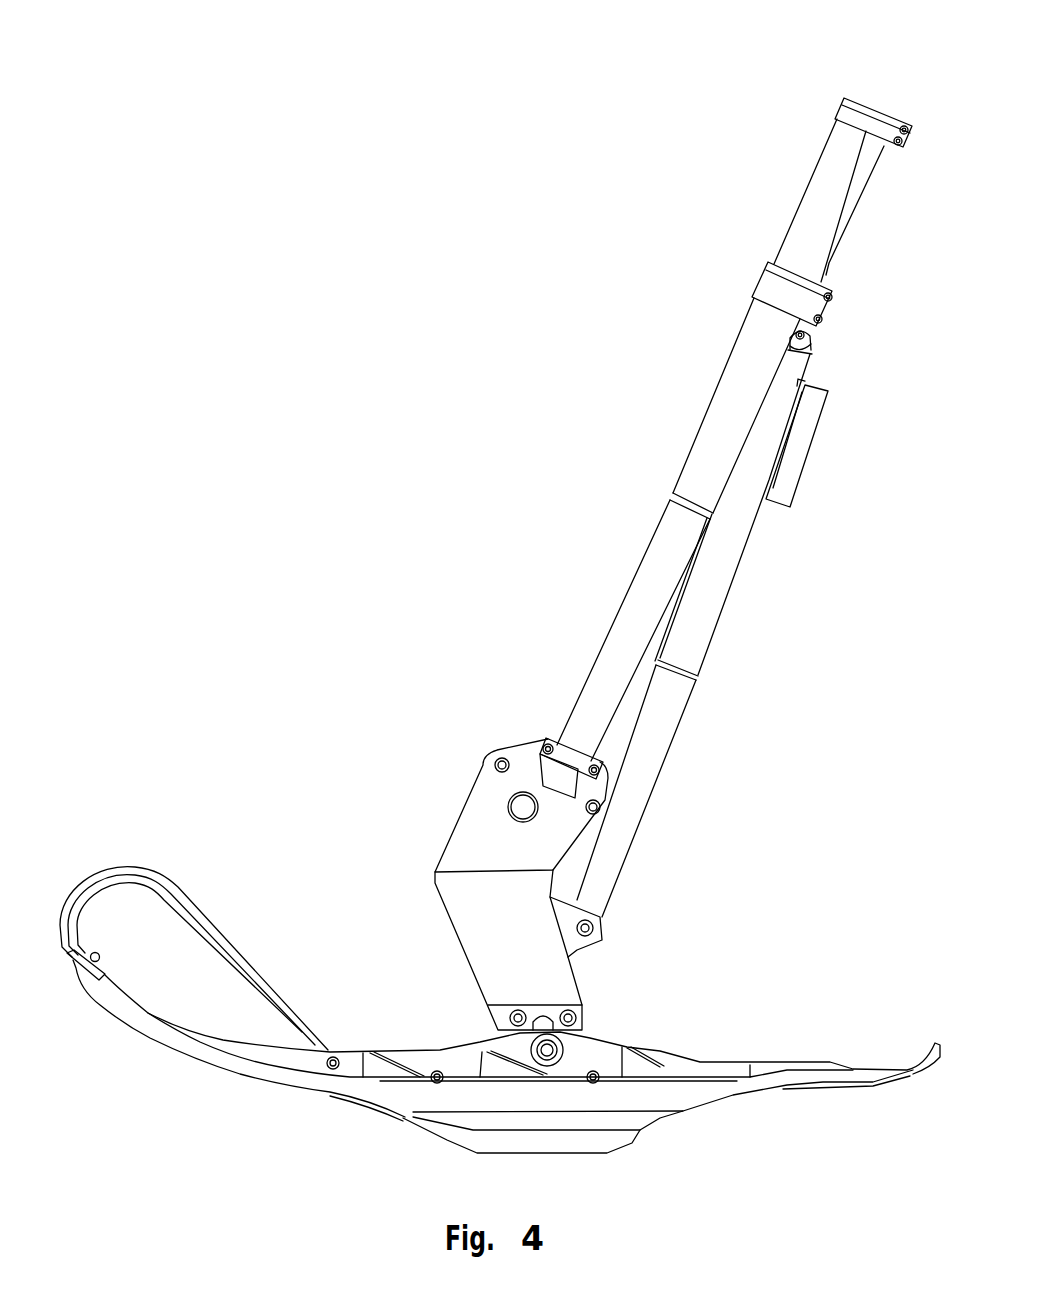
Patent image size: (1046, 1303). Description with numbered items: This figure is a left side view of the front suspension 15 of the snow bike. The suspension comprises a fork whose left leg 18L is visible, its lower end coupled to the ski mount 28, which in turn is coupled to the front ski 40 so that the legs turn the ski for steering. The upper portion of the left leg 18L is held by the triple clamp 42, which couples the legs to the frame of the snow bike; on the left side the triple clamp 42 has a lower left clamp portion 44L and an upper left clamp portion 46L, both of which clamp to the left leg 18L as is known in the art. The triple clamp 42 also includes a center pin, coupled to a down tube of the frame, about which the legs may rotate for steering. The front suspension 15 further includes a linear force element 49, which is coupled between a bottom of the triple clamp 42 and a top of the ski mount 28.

The front suspension 15 is at (347, 528).
The left leg 18L is at (700, 463).
The ski mount 28 is at (440, 837).
The front ski 40 is at (726, 1046).
The triple clamp 42 is at (843, 102).
The lower left clamp portion 44L is at (810, 297).
The upper left clamp portion 46L is at (862, 100).
The linear force element 49 is at (688, 735).